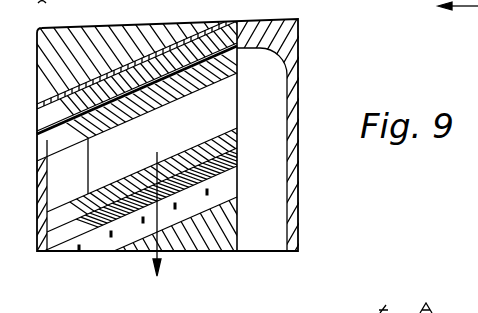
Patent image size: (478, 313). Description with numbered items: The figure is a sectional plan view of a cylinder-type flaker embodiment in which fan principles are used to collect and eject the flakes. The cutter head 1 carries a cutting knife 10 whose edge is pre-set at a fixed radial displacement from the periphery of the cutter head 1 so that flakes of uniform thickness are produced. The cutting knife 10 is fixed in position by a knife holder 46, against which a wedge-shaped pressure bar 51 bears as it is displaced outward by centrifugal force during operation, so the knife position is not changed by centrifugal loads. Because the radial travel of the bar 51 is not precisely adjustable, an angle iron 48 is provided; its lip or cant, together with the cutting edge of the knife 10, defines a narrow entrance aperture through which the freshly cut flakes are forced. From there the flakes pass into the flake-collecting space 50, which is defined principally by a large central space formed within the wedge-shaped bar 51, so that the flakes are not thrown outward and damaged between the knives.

The cutting knife 10 is at (150, 48).
The knife holder 46 is at (196, 48).
The flake-collecting space 50 is at (222, 88).
The wedge-shaped bar 51 is at (220, 147).
The angle iron 48 is at (222, 163).
The cutter head 1 is at (222, 228).